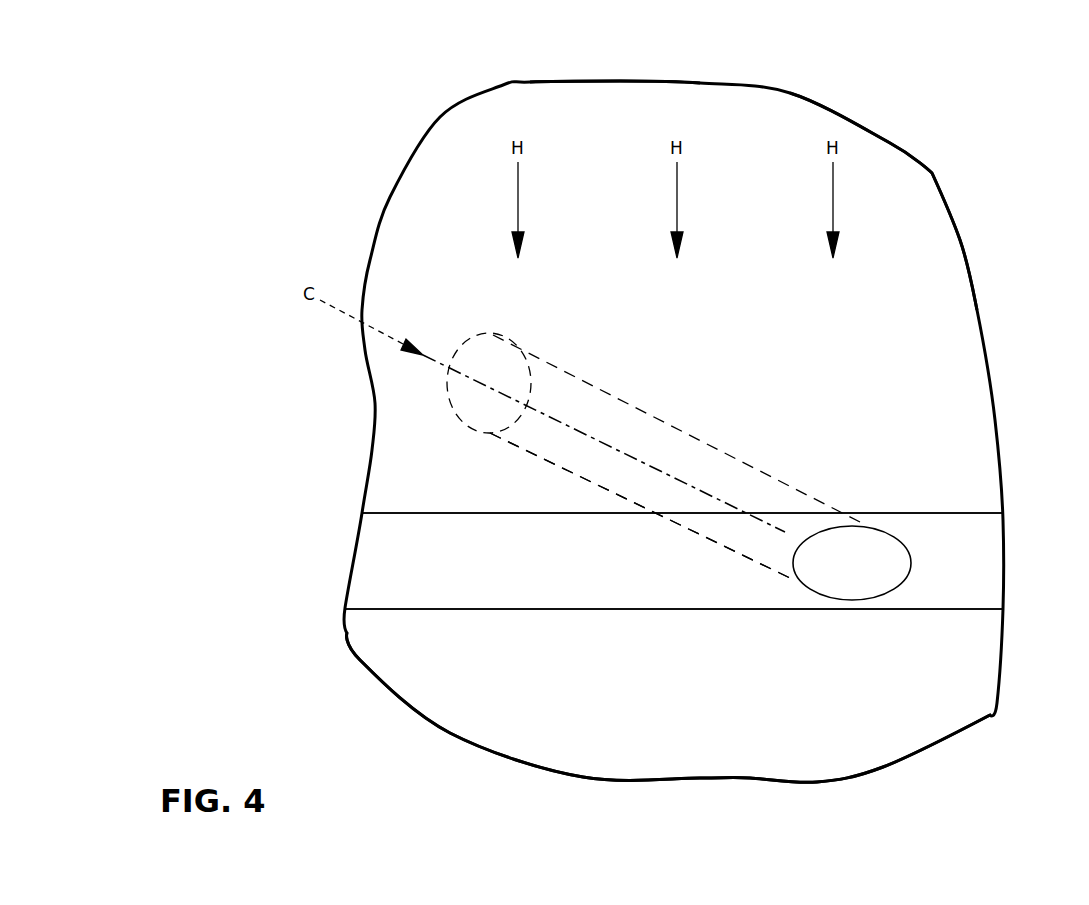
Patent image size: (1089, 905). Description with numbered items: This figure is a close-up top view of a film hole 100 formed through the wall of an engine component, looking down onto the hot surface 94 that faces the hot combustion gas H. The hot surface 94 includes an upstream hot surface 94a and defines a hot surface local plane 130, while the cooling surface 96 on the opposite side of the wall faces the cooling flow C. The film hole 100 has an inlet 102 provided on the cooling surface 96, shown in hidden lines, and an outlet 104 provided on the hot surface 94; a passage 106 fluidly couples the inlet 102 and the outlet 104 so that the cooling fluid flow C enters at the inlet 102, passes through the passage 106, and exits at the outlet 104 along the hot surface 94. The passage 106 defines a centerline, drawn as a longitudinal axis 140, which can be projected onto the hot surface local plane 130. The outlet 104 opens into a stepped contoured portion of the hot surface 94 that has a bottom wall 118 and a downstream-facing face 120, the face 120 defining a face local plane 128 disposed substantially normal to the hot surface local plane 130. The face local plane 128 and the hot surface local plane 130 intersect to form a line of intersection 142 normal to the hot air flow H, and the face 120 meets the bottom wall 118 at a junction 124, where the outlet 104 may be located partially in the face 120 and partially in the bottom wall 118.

The hot surface 94 is at (888, 320).
The upstream hot surface 94a is at (568, 103).
The cooling surface 96 is at (957, 212).
The film hole 100 is at (617, 397).
The inlet 102 is at (485, 338).
The outlet 104 is at (907, 579).
The passage 106 is at (533, 458).
The bottom wall 118 is at (864, 698).
The face 120 is at (398, 572).
The junction 124 is at (565, 610).
The face local plane 128 is at (970, 563).
The hot surface local plane 130 is at (900, 145).
The longitudinal axis 140 is at (643, 460).
The line of intersection 142 is at (422, 513).